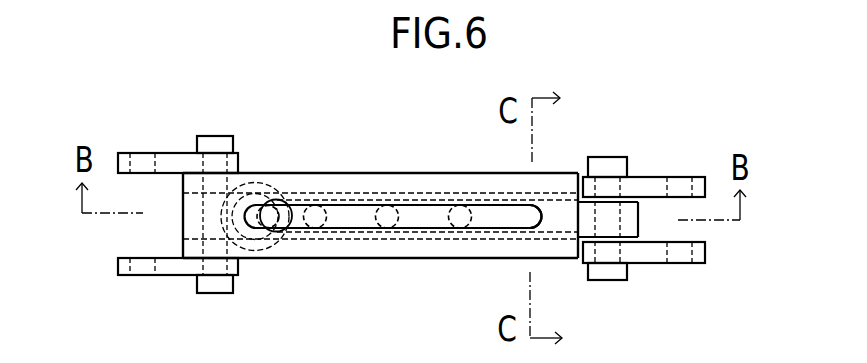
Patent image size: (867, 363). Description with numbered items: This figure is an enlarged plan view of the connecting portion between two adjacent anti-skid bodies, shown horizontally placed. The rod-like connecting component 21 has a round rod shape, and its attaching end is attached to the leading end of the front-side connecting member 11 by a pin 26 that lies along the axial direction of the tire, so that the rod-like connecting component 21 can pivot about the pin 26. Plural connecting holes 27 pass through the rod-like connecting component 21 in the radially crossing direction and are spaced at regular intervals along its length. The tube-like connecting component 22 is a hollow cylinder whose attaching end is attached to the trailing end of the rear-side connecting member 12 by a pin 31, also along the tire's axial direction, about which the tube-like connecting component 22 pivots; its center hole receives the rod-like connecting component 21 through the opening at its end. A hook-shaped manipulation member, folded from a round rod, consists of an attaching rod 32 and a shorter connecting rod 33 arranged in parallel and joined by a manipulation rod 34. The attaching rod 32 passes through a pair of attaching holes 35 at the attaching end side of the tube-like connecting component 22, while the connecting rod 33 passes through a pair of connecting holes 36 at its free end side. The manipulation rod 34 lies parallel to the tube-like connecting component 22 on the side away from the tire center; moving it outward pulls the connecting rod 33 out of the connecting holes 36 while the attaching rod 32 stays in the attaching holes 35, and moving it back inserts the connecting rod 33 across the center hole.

The front-side connecting member 11 is at (698, 177).
The rear-side connecting member 12 is at (125, 153).
The rod-like connecting component 21 is at (623, 275).
The tube-like connecting component 22 is at (382, 173).
The pin 26 is at (613, 157).
The connecting holes 27 is at (433, 232).
The pin 31 is at (213, 136).
The attaching rod 32 is at (255, 228).
The connecting rod 33 is at (540, 227).
The manipulation rod 34 is at (442, 204).
The attaching holes 35 is at (266, 192).
The connecting holes 36 is at (520, 226).